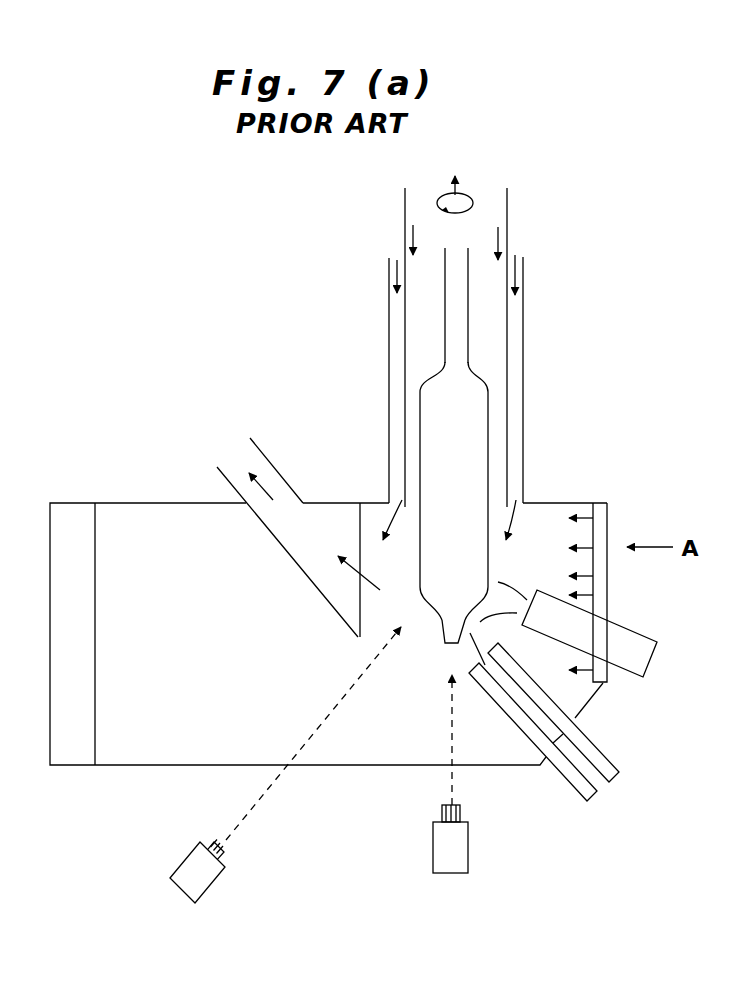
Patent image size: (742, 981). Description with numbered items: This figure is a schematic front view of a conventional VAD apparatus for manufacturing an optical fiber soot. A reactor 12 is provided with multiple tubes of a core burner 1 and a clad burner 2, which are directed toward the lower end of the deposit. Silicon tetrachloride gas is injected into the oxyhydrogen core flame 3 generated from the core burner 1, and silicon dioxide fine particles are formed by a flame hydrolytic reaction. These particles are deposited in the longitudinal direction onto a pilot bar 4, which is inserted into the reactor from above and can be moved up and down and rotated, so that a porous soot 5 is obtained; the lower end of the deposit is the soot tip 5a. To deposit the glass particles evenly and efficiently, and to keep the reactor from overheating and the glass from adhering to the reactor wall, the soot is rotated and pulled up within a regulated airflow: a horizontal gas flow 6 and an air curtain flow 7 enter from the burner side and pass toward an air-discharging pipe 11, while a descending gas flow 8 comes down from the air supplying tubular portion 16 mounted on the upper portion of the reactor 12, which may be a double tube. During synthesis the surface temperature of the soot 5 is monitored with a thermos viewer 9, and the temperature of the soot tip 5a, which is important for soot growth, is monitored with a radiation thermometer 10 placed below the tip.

The core burner 1 is at (593, 800).
The clad burner 2 is at (643, 655).
The oxyhydrogen flame (core flame) 3 is at (472, 665).
The pilot bar 4 is at (455, 327).
The porous soot 5 is at (435, 488).
The soot tip 5a is at (457, 658).
The horizontal gas flow 6 is at (572, 547).
The air curtain flow 7 is at (590, 518).
The descending gas flow 8 is at (407, 242).
The thermos viewer 9 is at (207, 875).
The radiation thermometer 10 is at (458, 845).
The air-discharging pipe 11 is at (273, 478).
The reactor 12 is at (147, 502).
The air supplying tubular portion 16 is at (507, 333).